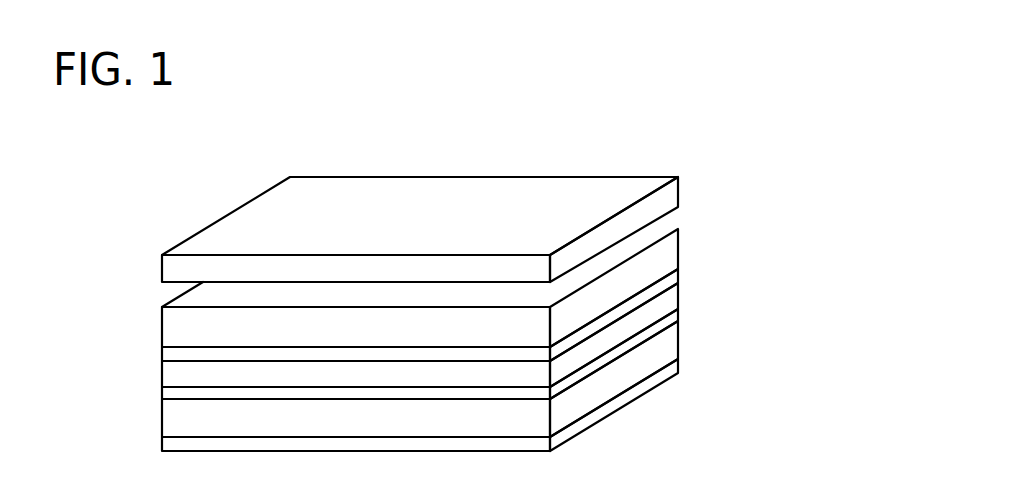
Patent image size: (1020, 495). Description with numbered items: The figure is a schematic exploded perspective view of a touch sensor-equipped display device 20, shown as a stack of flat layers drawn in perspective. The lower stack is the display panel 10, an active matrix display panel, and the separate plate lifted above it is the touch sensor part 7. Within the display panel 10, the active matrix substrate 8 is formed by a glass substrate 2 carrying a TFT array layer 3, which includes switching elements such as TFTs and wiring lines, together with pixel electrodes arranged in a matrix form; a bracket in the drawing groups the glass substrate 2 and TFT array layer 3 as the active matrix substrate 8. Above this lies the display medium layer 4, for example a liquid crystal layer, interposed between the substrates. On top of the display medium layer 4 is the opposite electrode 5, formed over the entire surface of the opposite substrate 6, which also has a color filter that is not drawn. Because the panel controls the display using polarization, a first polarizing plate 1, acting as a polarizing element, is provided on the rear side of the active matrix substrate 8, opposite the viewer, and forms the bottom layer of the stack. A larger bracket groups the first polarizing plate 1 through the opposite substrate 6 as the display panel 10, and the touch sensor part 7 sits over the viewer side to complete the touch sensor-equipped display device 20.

The first polarizing plate 1 is at (668, 377).
The glass substrate 2 is at (667, 351).
The TFT array layer 3 is at (667, 323).
The display medium layer 4 is at (667, 303).
The opposite electrode 5 is at (662, 278).
The opposite substrate 6 is at (668, 252).
The touch sensor part 7 is at (668, 195).
The active matrix substrate 8 is at (738, 298).
The display panel 10 is at (795, 373).
The touch sensor-equipped display device 20 is at (621, 141).